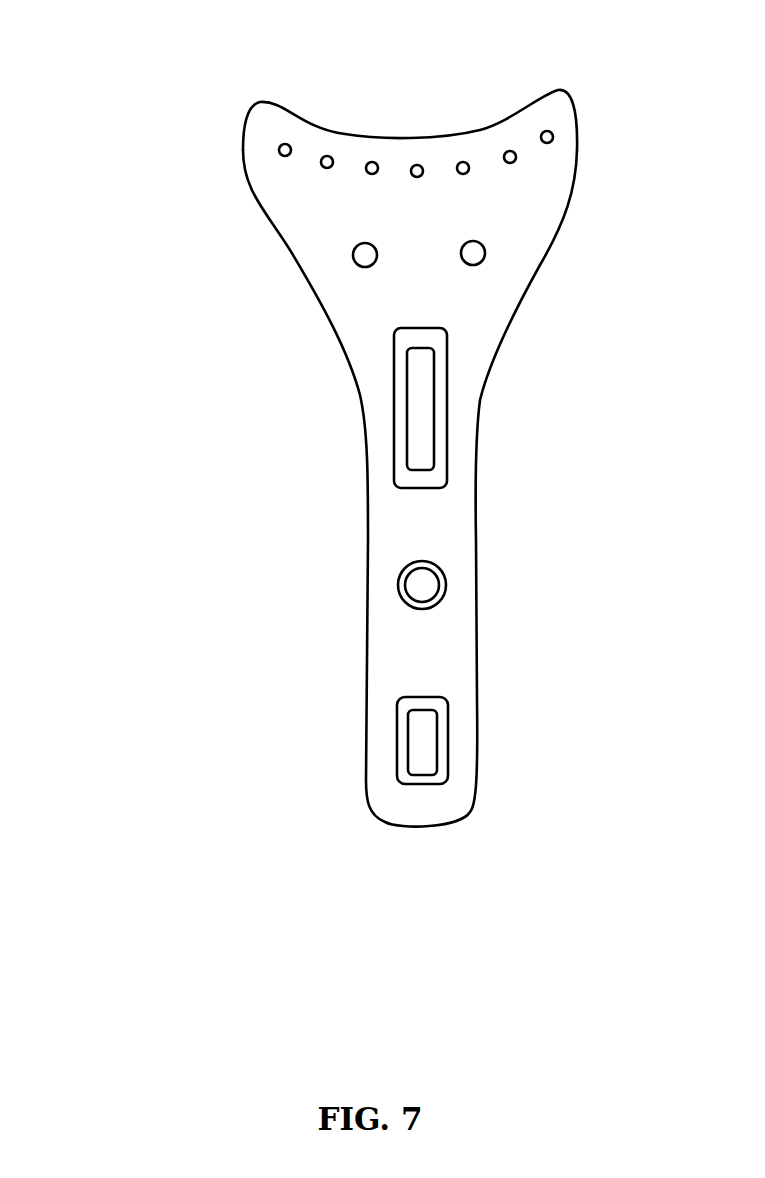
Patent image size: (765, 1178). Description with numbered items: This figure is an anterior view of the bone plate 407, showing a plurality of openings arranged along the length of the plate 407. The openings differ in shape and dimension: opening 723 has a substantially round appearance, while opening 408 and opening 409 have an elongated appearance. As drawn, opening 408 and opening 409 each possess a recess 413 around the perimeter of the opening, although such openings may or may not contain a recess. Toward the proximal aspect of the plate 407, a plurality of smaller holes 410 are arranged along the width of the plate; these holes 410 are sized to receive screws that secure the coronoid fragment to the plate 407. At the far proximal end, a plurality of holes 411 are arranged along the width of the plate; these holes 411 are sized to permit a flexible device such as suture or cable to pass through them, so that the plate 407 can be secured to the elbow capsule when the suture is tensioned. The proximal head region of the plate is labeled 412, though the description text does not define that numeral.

The bone plate 407 is at (477, 665).
The opening 408 is at (403, 738).
The opening 409 is at (420, 382).
The smaller holes 410 is at (377, 257).
The holes 411 is at (365, 169).
The head portion 412 is at (265, 98).
The recess 413 is at (438, 470).
The opening 723 is at (398, 580).